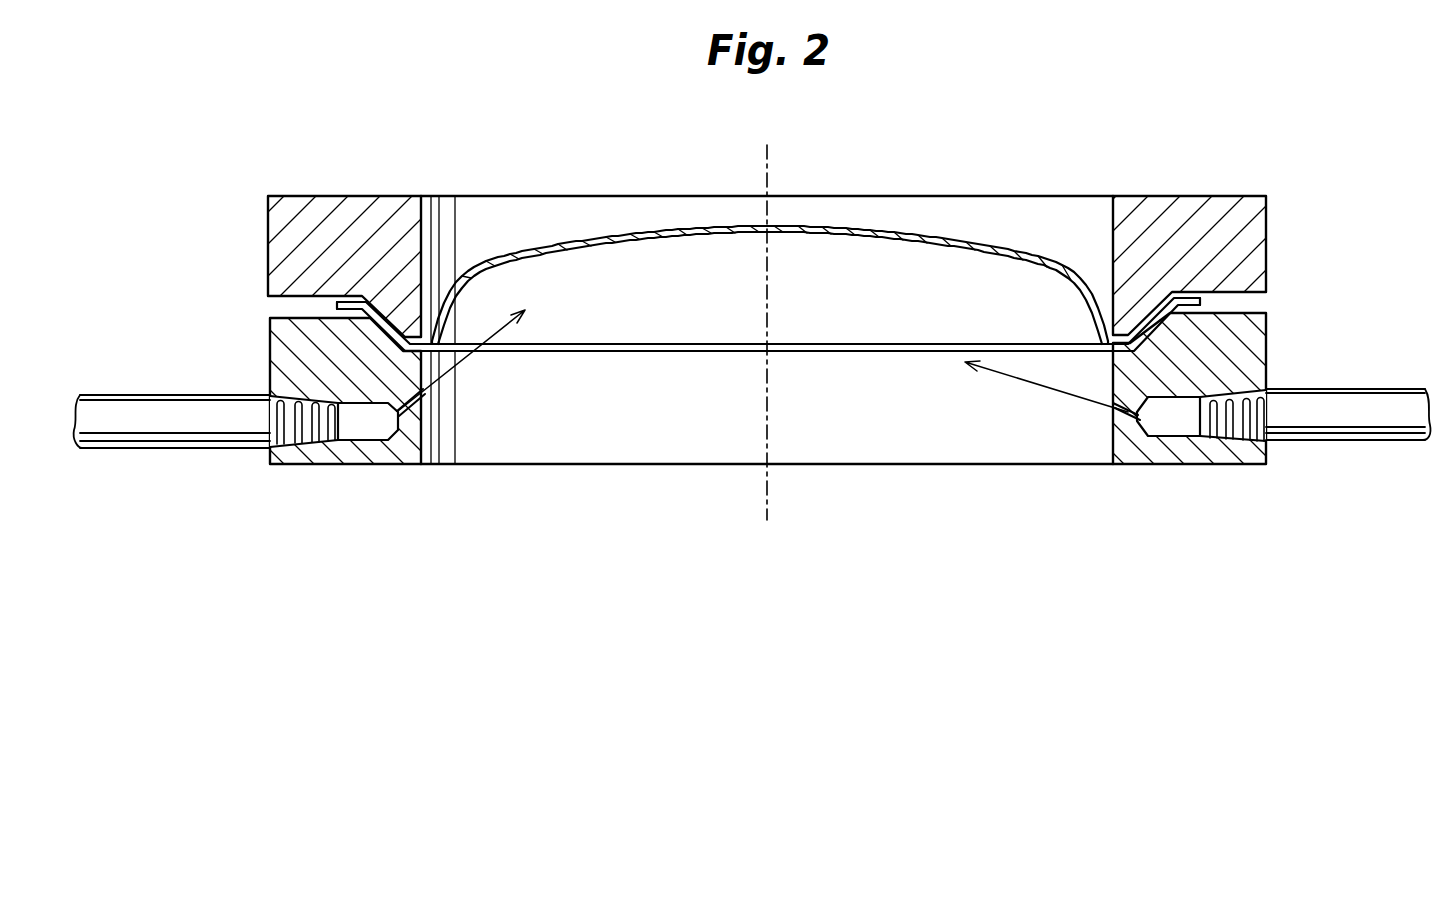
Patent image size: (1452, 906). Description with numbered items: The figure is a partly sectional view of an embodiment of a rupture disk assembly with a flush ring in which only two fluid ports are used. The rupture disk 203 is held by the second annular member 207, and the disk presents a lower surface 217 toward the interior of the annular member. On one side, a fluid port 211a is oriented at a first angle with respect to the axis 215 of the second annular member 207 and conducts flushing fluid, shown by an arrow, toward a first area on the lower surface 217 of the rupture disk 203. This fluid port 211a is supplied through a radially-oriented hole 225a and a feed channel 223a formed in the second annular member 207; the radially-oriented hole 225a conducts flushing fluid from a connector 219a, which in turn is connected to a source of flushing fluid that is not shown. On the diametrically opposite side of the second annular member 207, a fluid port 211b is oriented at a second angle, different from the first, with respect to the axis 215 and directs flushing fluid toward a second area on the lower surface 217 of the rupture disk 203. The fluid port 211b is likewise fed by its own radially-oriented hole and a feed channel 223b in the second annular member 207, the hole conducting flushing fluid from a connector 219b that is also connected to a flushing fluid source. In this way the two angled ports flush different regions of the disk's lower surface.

The rupture disk 203 is at (842, 226).
The second annular member 207 is at (1268, 358).
The fluid port 211a is at (427, 393).
The fluid port 211b is at (1113, 416).
The axis 215 is at (768, 500).
The lower surface 217 is at (668, 240).
The connector 219a is at (128, 450).
The connector 219b is at (1330, 445).
The feed channel 223a is at (427, 423).
The feed channel 223b is at (1113, 435).
The radially-oriented hole 225a is at (357, 447).